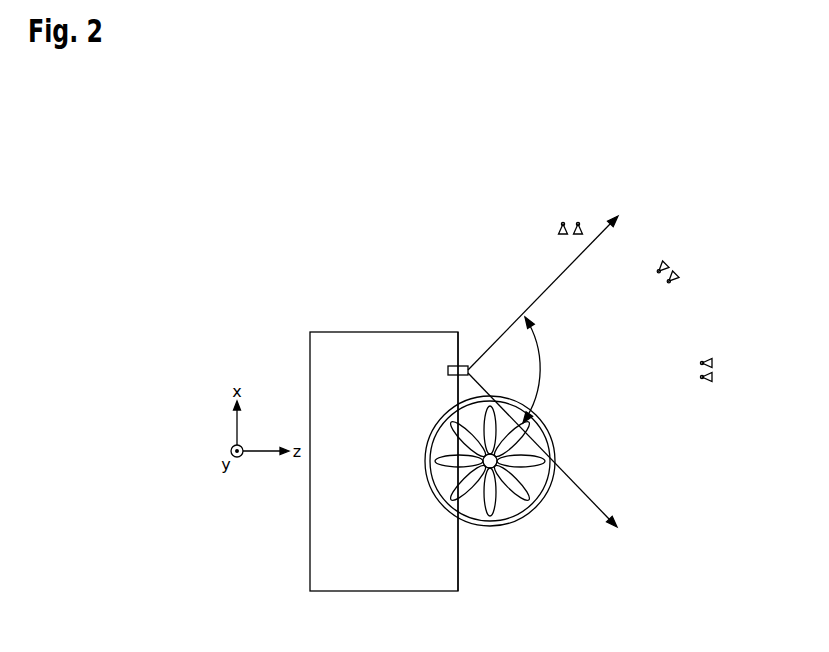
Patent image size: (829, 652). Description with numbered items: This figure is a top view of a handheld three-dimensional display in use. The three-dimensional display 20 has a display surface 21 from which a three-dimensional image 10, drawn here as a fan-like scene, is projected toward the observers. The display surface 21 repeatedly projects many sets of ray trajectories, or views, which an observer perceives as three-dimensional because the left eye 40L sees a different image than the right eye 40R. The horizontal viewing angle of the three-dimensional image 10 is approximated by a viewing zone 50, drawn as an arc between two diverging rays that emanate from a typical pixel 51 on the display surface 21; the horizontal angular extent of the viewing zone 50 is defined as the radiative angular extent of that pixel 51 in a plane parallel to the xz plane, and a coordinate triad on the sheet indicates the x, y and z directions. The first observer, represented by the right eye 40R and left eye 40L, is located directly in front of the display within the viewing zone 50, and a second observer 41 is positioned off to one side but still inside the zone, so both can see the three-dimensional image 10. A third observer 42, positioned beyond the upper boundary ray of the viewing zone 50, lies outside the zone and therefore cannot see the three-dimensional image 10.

The 3D image 10 is at (520, 522).
The 3D display 20 is at (386, 592).
The display surface 21 is at (459, 570).
The right eye 40R is at (713, 359).
The left eye 40L is at (713, 381).
The second observer 41 is at (677, 264).
The third observer 42 is at (573, 219).
The viewing zone 50 is at (541, 370).
The pixel 51 is at (447, 371).